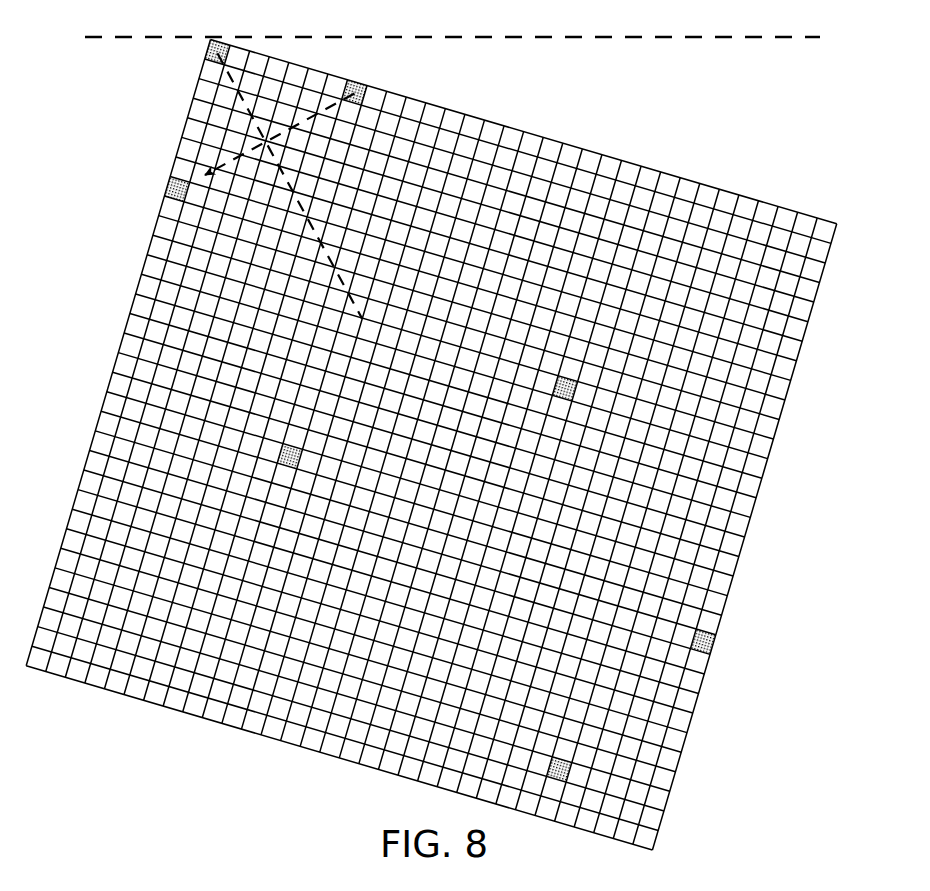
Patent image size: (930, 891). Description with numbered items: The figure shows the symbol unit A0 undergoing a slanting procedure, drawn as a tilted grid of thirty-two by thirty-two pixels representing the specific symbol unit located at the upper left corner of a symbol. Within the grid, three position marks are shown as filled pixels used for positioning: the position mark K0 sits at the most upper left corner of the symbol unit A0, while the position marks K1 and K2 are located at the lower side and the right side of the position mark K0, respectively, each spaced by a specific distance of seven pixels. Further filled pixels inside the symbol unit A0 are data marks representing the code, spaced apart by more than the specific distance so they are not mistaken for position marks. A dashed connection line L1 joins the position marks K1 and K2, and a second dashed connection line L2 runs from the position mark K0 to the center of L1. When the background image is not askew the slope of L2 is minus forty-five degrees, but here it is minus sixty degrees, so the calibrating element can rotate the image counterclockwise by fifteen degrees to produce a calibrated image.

The symbol unit A0 is at (431, 445).
The position mark K0 is at (208, 43).
The position mark K1 is at (170, 182).
The position mark K2 is at (358, 90).
The connection line L1 is at (203, 174).
The connection line L2 is at (345, 279).